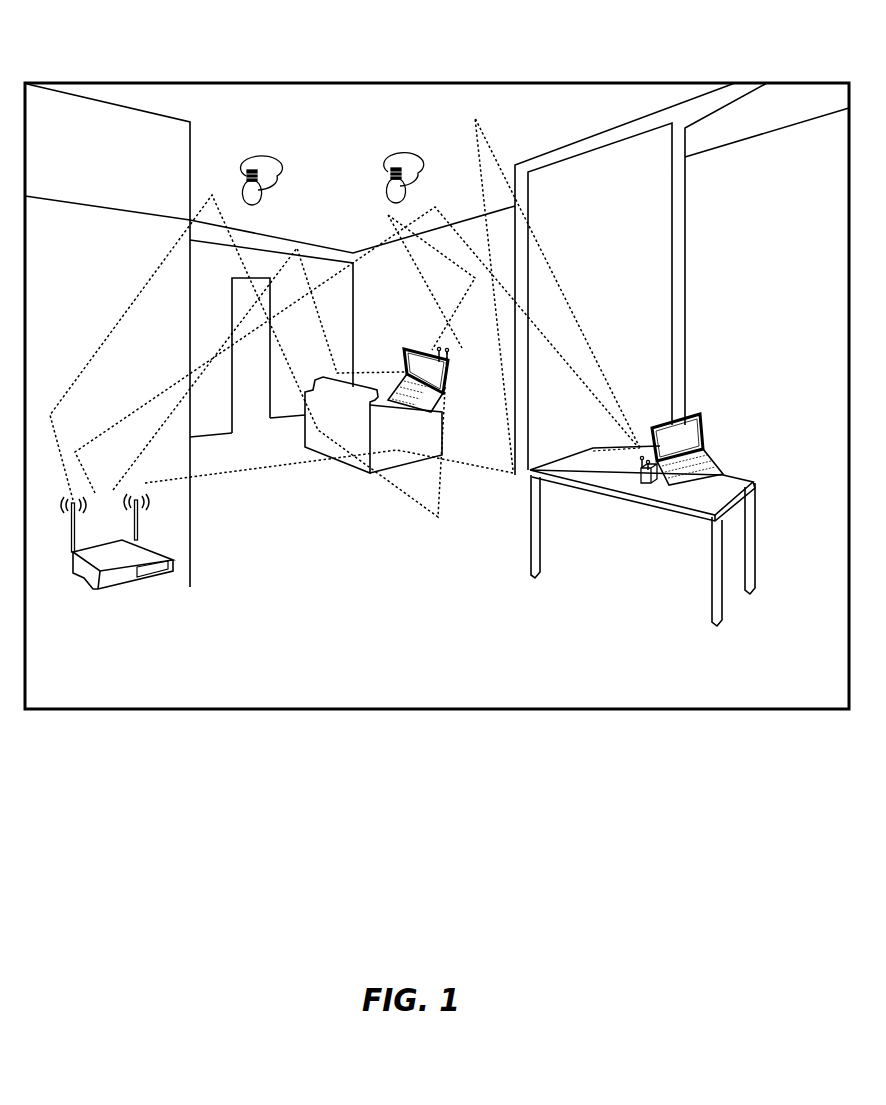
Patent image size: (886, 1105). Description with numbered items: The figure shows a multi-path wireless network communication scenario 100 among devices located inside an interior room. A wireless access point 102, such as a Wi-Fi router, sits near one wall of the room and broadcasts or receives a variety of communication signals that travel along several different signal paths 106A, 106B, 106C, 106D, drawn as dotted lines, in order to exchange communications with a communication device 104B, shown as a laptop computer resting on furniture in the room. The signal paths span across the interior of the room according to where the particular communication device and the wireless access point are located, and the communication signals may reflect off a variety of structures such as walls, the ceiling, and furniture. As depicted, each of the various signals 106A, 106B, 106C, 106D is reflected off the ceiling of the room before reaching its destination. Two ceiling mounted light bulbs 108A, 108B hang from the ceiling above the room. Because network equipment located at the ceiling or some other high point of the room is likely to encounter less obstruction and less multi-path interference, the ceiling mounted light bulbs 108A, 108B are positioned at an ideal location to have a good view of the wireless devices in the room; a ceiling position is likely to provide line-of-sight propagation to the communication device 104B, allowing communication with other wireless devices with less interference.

The multi-path wireless network communication scenario 100 is at (104, 44).
The wireless access point 102 is at (122, 586).
The communication device 104B is at (430, 408).
The signal path 106A is at (100, 350).
The signal path 106B is at (140, 405).
The signal path 106C is at (189, 433).
The signal path 106D is at (220, 472).
The ceiling mounted light bulb 108A is at (250, 169).
The ceiling mounted light bulb 108B is at (393, 168).